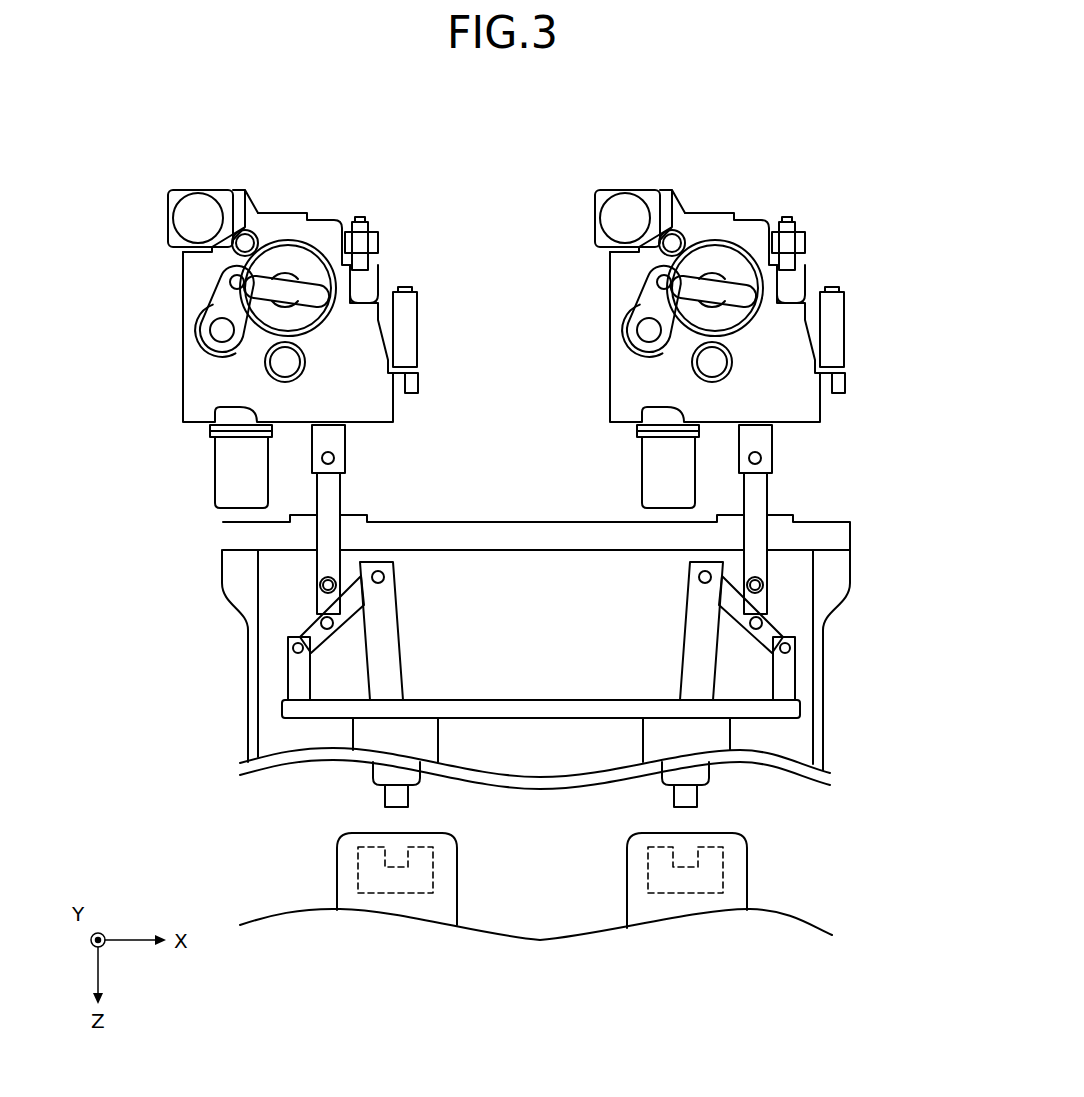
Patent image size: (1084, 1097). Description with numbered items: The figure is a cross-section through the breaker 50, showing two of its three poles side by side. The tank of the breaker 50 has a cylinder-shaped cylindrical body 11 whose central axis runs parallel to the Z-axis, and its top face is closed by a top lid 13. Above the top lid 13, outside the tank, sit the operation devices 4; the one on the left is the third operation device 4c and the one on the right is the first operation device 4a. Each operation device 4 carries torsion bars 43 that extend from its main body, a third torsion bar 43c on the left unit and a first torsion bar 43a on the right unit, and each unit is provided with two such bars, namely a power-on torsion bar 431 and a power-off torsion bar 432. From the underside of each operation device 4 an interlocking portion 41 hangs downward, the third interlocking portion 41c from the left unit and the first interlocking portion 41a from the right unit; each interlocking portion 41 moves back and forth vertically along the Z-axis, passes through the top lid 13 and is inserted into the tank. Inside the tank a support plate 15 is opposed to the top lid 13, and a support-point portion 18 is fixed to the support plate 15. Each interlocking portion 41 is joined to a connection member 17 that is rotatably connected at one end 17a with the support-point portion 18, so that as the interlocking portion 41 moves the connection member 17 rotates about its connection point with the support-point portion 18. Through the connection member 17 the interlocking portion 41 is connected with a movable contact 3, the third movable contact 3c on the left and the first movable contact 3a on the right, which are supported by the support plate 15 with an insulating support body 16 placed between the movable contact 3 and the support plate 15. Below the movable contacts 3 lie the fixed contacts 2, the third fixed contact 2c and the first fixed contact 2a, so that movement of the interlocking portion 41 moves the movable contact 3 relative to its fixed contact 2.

The breaker 50 is at (496, 153).
The operation device 4 is at (506, 314).
The third operation device 4c is at (316, 182).
The first operation device 4a is at (743, 182).
The torsion bar 43 is at (368, 311).
The third torsion bar 43c is at (218, 328).
The first torsion bar 43a is at (645, 328).
The power-on torsion bar 431 is at (435, 330).
The power-off torsion bar 432 is at (288, 364).
The interlocking portion 41 is at (622, 519).
The third interlocking portion 41c is at (333, 493).
The first interlocking portion 41a is at (760, 493).
The top lid 13 is at (842, 536).
The cylindrical body 11 is at (846, 568).
The connection member 17 is at (313, 626).
The one end of connection member 17a is at (310, 630).
The support-point portion 18 is at (294, 678).
The support plate 15 is at (795, 712).
The insulating support body 16 is at (707, 738).
The movable contact 3 is at (544, 795).
The third movable contact 3c is at (387, 797).
The first movable contact 3a is at (697, 797).
The fixed contact 2 is at (542, 886).
The third fixed contact 2c is at (358, 873).
The first fixed contact 2a is at (723, 873).